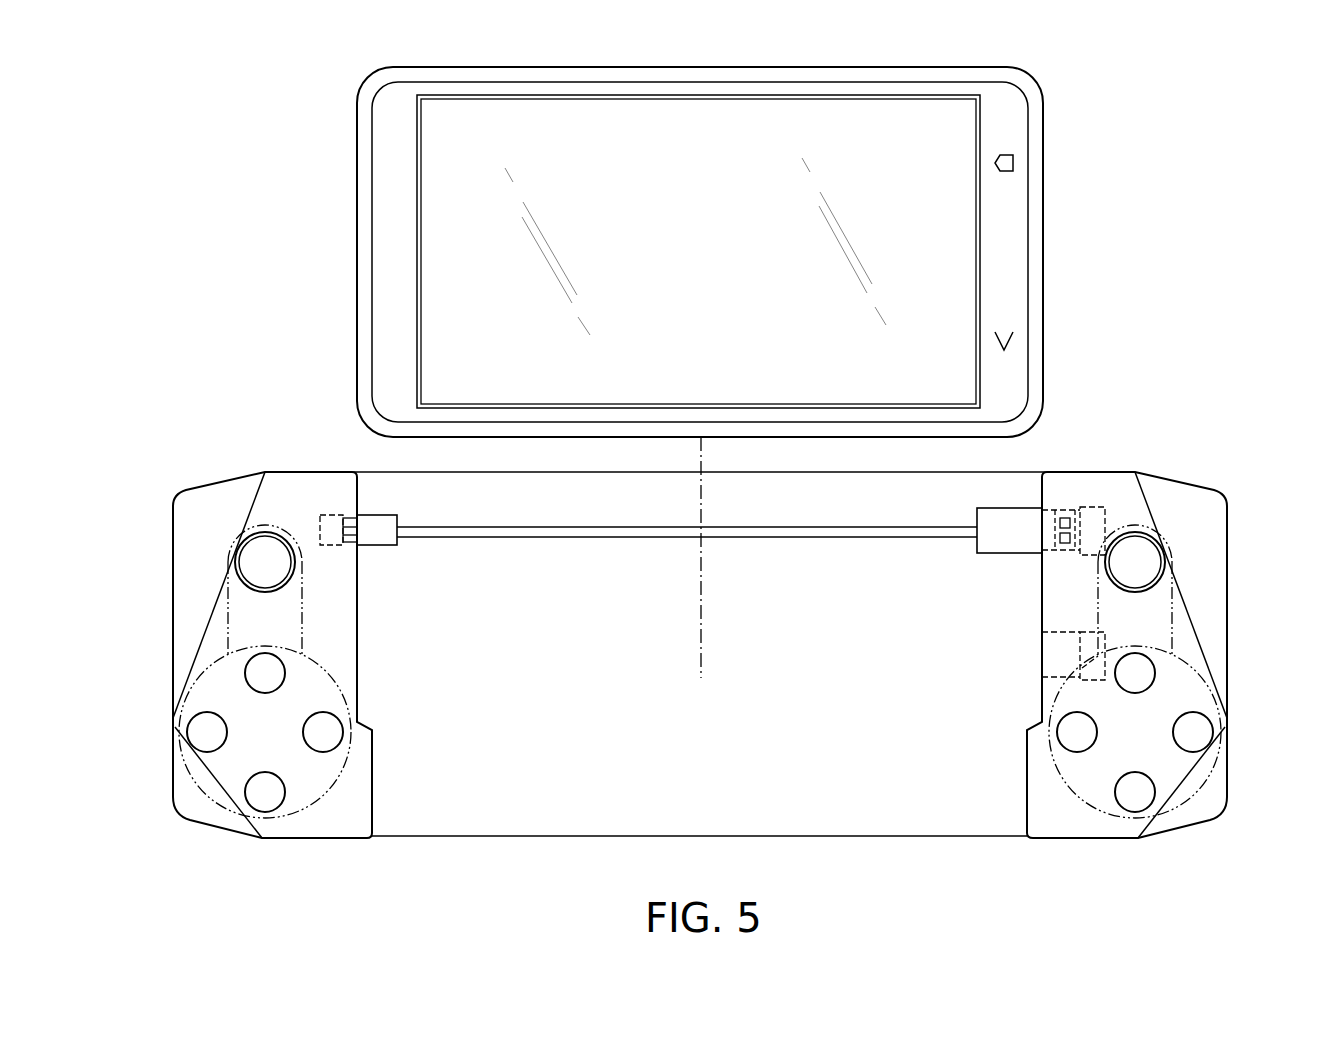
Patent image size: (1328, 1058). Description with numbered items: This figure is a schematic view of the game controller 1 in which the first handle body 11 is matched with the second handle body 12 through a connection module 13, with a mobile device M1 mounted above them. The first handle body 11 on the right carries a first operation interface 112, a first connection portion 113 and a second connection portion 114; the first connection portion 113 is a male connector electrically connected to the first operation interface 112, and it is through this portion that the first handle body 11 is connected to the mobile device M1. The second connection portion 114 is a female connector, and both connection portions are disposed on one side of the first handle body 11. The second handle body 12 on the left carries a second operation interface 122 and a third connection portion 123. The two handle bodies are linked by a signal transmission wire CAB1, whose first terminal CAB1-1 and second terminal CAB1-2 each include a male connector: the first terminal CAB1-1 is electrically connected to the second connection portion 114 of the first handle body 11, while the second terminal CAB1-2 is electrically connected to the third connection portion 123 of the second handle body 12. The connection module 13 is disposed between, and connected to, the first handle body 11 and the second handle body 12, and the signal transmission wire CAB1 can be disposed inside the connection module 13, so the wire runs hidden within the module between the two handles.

The game controller 1 is at (1139, 447).
The first handle body 11 is at (1137, 625).
The second handle body 12 is at (236, 625).
The connection module 13 is at (939, 818).
The first operation interface 112 is at (1172, 590).
The first connection portion 113 is at (1042, 655).
The second connection portion 114 is at (1060, 508).
The second operation interface 122 is at (227, 590).
The third connection portion 123 is at (342, 518).
The mobile device M1 is at (1044, 252).
The signal transmission wire CAB1 is at (647, 530).
The first terminal CAB1-1 is at (1010, 545).
The second terminal CAB1-2 is at (380, 545).